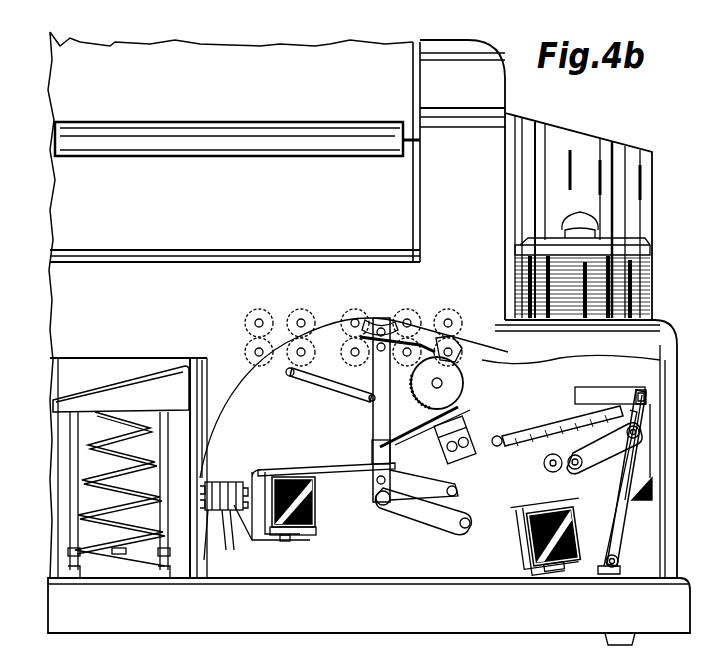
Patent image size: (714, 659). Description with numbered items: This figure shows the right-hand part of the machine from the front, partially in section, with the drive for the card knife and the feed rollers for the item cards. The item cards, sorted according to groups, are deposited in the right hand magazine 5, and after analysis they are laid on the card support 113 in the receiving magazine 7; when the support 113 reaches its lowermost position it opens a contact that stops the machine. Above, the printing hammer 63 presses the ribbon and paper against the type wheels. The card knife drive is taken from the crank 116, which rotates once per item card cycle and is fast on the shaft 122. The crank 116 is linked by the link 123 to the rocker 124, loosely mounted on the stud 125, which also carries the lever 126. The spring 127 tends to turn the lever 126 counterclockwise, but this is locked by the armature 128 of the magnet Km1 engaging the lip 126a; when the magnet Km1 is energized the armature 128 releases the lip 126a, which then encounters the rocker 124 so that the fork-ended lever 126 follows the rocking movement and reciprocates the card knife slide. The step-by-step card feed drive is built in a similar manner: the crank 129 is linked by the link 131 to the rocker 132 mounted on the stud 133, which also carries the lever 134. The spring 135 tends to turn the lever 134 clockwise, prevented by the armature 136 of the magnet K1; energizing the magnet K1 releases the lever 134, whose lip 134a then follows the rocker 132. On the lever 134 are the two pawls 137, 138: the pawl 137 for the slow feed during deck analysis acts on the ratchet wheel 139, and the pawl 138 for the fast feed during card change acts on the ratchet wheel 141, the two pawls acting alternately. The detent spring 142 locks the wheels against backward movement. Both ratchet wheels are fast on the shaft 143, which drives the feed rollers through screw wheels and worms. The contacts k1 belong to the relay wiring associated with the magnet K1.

The right hand magazine 5 is at (568, 144).
The magazine 7 is at (182, 552).
The printing hammer 63 is at (302, 148).
The card support 113 is at (112, 404).
The crank 116 is at (560, 455).
The shaft 122 is at (553, 470).
The link 123 is at (603, 452).
The rocker 124 is at (600, 566).
The stud 125 is at (612, 568).
The lever 126 is at (638, 392).
The lip 126a is at (643, 491).
The spring 127 is at (583, 424).
The armature 128 is at (595, 502).
The crank 129 is at (454, 493).
The link 131 is at (418, 520).
The rocker 132 is at (378, 506).
The stud 133 is at (355, 324).
The lever 134 is at (372, 448).
The lip 134a is at (458, 492).
The spring 135 is at (292, 378).
The armature 136 is at (341, 468).
The pawl 137 is at (390, 340).
The pawl 138 is at (430, 425).
The ratchet wheel 139 is at (456, 372).
The ratchet wheel 141 is at (446, 394).
The detent spring 142 is at (458, 426).
The shaft 143 is at (440, 383).
The magnet K1 is at (316, 512).
The magnet Km1 is at (545, 550).
The relay contacts k1 is at (305, 598).